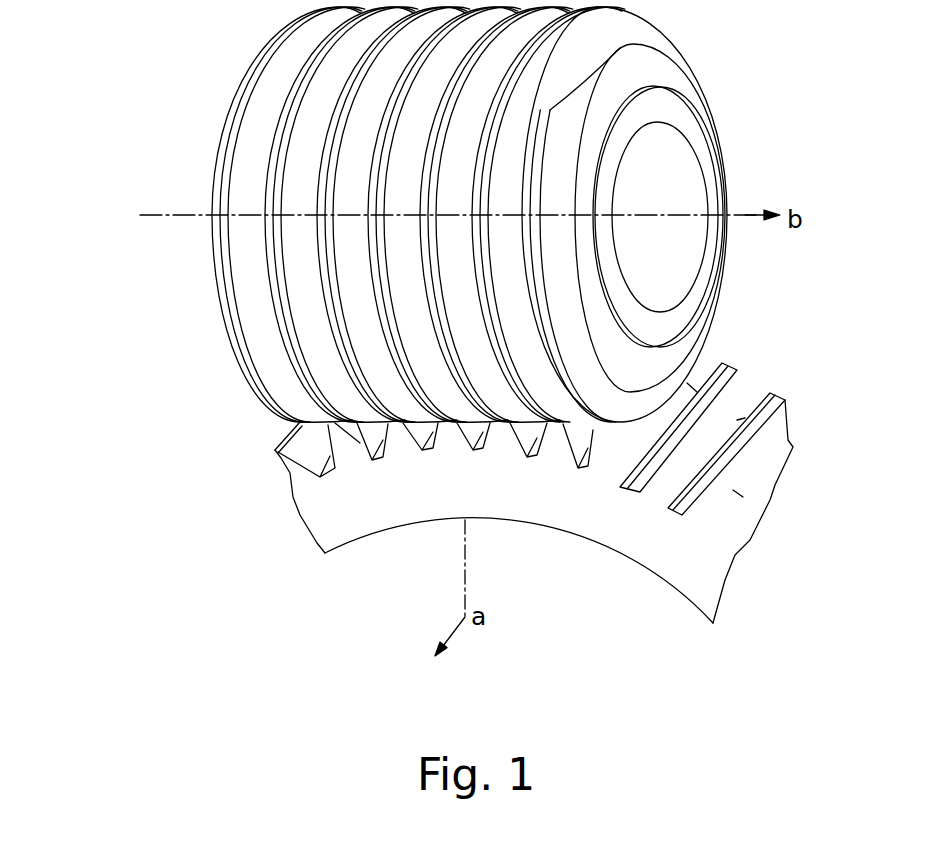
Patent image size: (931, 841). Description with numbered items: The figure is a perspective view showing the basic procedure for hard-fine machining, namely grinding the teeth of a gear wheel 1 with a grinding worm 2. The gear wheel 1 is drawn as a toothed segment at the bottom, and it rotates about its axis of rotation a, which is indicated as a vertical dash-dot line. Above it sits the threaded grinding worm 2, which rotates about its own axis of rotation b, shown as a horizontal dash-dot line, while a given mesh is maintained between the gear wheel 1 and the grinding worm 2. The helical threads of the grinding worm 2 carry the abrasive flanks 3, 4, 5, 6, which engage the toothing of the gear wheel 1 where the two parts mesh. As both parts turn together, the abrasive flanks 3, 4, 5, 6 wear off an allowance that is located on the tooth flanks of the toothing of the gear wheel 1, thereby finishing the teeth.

The gear wheel 1 is at (710, 573).
The grinding worm 2 is at (258, 74).
The abrasive flank 3 is at (250, 300).
The abrasive flank 4 is at (295, 322).
The abrasive flank 5 is at (358, 342).
The abrasive flank 6 is at (496, 214).